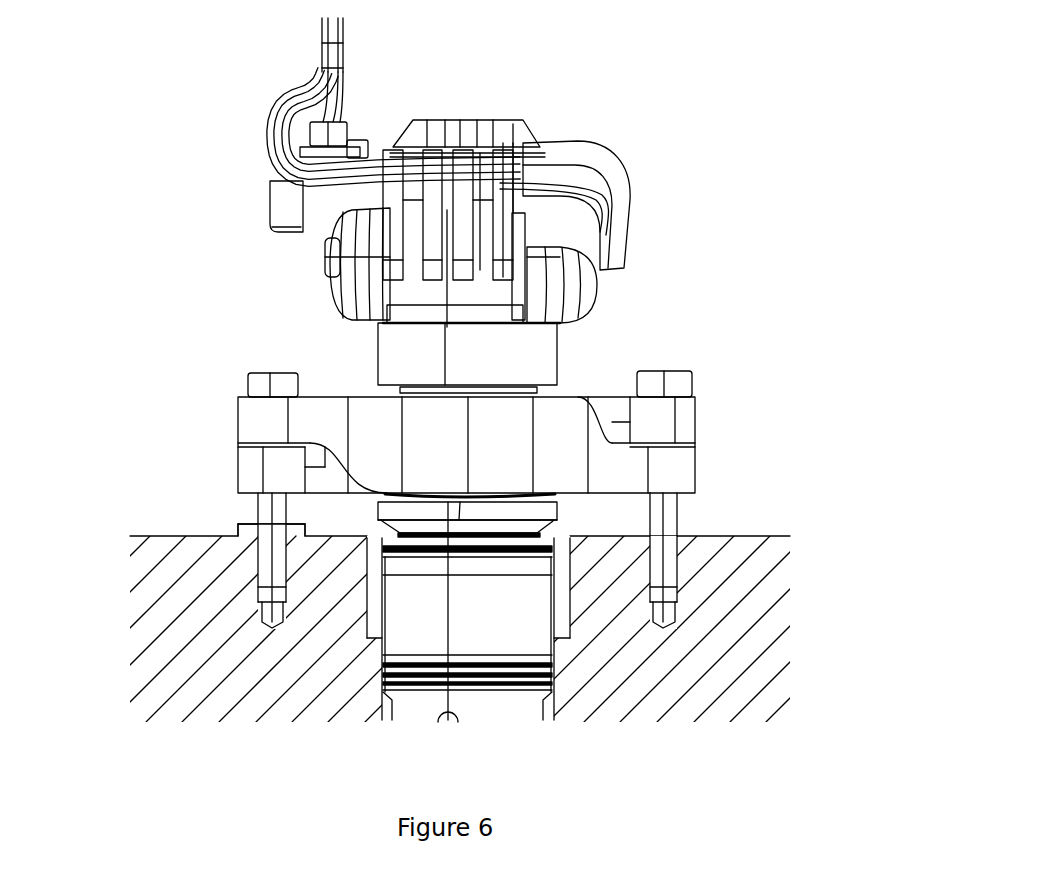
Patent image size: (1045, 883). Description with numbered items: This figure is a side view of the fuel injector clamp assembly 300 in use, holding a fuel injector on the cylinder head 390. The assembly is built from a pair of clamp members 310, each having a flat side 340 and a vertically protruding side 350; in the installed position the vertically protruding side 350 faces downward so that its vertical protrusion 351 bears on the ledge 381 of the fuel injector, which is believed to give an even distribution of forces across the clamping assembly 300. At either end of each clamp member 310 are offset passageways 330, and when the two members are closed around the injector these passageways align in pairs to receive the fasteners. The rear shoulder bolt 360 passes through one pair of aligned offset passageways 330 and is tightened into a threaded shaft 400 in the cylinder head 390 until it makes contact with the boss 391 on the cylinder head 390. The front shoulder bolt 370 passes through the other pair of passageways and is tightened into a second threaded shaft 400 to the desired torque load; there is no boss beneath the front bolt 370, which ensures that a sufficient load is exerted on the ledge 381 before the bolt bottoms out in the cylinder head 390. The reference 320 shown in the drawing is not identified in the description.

The clamp assembly 300 is at (780, 385).
The clamp member 310 is at (214, 431).
The clamp body center section 320 is at (470, 442).
The offset passageways 330 is at (256, 422).
The flat side 340 is at (348, 398).
The vertically protruding side 350 is at (566, 499).
The vertical protrusion 351 is at (458, 495).
The rear shoulder bolt 360 is at (258, 370).
The front shoulder bolt 370 is at (682, 368).
The ledge 381 is at (378, 511).
The cylinder head 390 is at (740, 528).
The boss 391 is at (240, 530).
The threaded shaft 400 is at (262, 570).